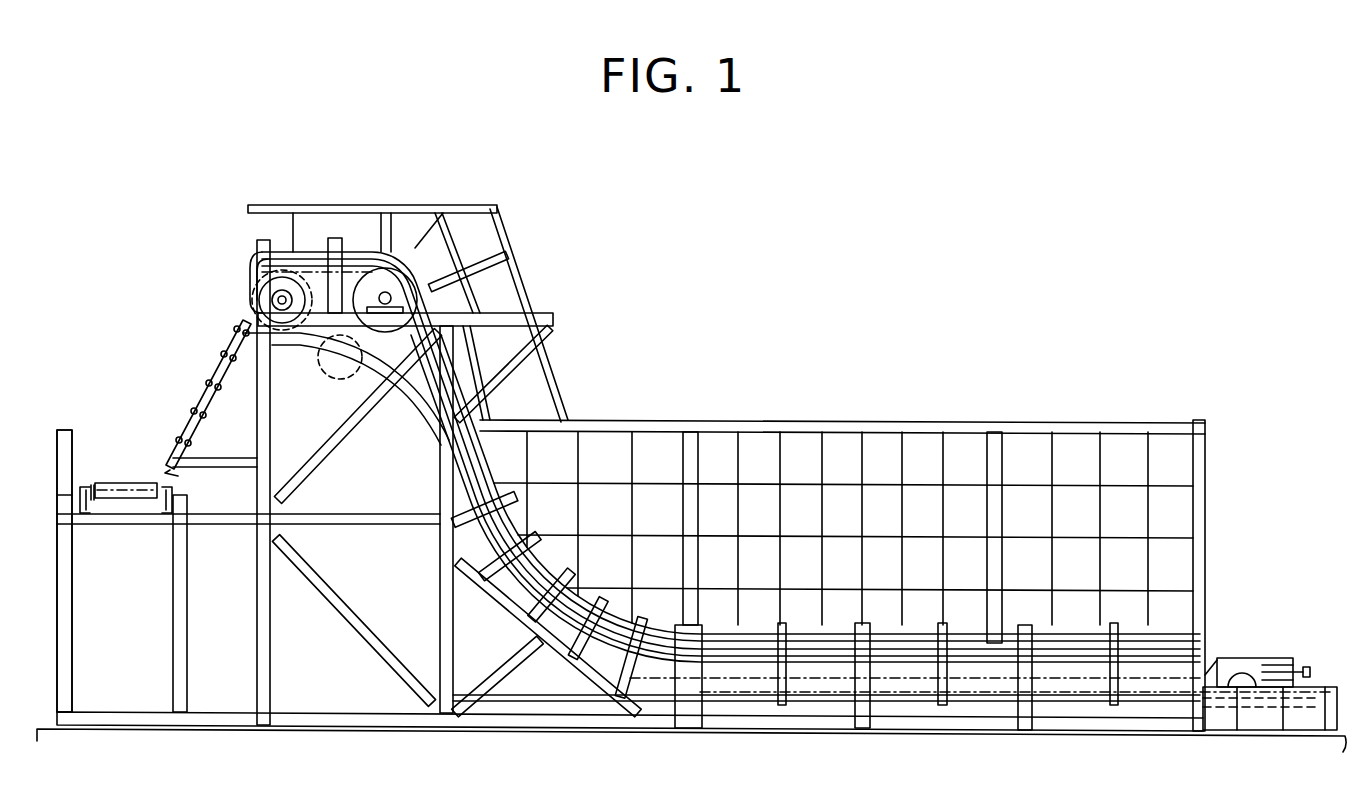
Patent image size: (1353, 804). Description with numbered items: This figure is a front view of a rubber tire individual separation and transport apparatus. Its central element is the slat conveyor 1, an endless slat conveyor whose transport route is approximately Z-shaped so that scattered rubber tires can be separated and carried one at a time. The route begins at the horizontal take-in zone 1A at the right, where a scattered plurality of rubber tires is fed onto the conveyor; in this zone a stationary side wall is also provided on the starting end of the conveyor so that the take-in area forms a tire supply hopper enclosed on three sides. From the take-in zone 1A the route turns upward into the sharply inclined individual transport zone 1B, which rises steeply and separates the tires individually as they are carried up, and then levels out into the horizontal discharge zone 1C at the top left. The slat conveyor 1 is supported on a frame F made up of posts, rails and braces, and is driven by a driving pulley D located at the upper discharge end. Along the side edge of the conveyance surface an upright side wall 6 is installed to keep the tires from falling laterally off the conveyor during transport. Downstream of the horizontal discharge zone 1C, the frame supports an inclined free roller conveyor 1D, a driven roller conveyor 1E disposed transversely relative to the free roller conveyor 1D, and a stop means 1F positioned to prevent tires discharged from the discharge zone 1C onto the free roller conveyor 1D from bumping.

The slat conveyor 1 is at (817, 645).
The horizontal take-in zone 1A is at (985, 653).
The sharply inclined individual transport zone 1B is at (457, 561).
The horizontal discharge zone 1C is at (357, 263).
The inclined free roller conveyor 1D is at (203, 397).
The driven roller conveyor 1E is at (119, 483).
The stop means 1F is at (66, 428).
The side wall 6 is at (537, 383).
The driving pulley D is at (263, 292).
The frame F is at (68, 653).